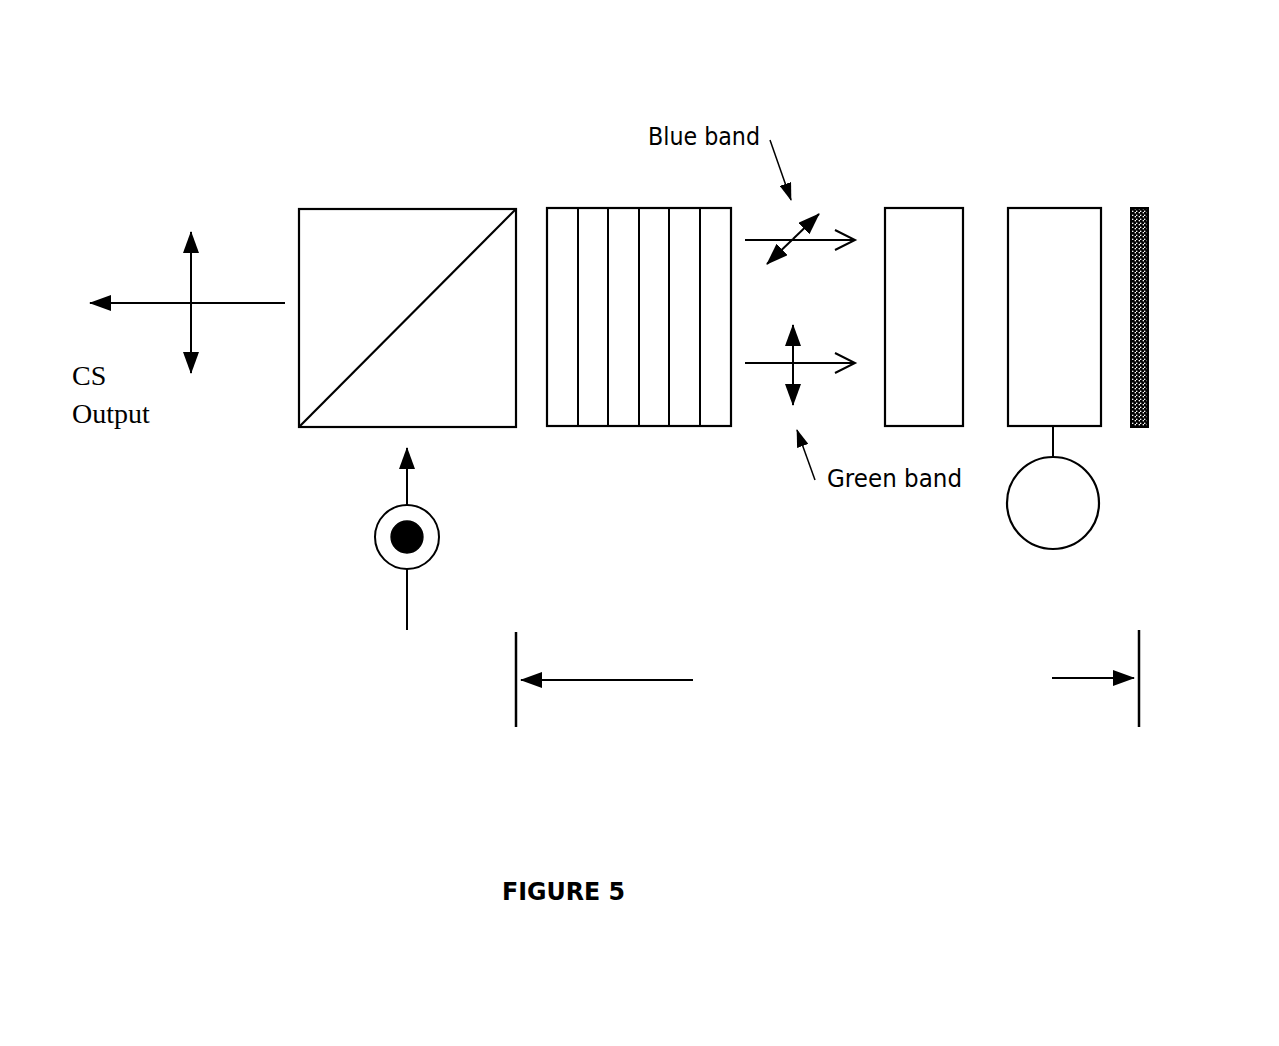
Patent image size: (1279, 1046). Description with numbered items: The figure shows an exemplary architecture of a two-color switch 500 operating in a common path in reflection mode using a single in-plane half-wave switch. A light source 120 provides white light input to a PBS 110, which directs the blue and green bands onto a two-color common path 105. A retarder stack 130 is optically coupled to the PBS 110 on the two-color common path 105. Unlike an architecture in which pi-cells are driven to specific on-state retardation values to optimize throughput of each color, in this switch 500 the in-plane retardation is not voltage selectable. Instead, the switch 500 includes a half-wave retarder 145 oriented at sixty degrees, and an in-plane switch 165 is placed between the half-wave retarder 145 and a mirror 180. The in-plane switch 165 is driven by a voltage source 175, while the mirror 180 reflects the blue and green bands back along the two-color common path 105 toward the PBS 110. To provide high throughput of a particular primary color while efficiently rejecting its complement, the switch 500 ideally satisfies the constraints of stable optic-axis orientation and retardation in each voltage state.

The two-color switch 500 is at (190, 80).
The PBS 110 is at (415, 207).
The light source 120 is at (398, 562).
The retarder stack 130 is at (608, 207).
The half-wave retarder 145 is at (931, 207).
The in-plane switch 165 is at (1068, 207).
The voltage source 175 is at (1070, 552).
The mirror 180 is at (1141, 207).
The two-color common path 105 is at (827, 678).